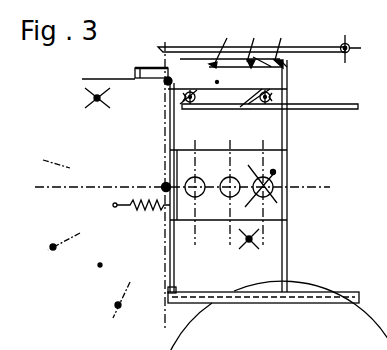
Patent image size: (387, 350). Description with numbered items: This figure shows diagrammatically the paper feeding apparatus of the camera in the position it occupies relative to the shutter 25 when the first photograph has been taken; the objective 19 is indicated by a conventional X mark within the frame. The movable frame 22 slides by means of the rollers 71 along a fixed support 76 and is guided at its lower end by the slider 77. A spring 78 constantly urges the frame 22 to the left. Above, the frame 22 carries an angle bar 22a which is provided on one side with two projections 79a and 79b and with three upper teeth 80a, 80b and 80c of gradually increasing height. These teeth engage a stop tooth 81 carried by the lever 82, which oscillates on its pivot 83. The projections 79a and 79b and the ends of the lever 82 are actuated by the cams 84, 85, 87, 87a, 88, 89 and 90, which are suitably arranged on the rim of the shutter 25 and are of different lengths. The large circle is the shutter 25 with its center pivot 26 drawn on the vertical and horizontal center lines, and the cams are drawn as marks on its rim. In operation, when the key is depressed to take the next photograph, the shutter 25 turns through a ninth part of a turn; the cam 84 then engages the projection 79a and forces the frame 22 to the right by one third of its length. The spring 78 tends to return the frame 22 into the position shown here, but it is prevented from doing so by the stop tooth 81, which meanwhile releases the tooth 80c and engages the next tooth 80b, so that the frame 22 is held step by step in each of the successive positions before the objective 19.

The objective 19 is at (270, 196).
The movable frame 22 is at (276, 213).
The angle bar 22a is at (217, 82).
The shutter 25 is at (100, 265).
The disc pivot 26 is at (160, 184).
The rollers 71 is at (188, 106).
The fixed support 76 is at (337, 103).
The slider 77 is at (334, 295).
The spring 78 is at (128, 209).
The projection 79a is at (166, 79).
The projection 79b is at (134, 72).
The upper tooth 80a is at (229, 45).
The upper tooth 80b is at (263, 45).
The upper tooth 80c is at (287, 65).
The stop tooth 81 is at (286, 44).
The lever 82 is at (190, 47).
The pivot 83 is at (350, 42).
The cam 84 is at (99, 75).
The cam 85 is at (94, 98).
The cam 87 is at (53, 249).
The cam 87a is at (120, 306).
The cam 88 is at (252, 240).
The cam 89 is at (274, 172).
The cam 90 is at (250, 91).